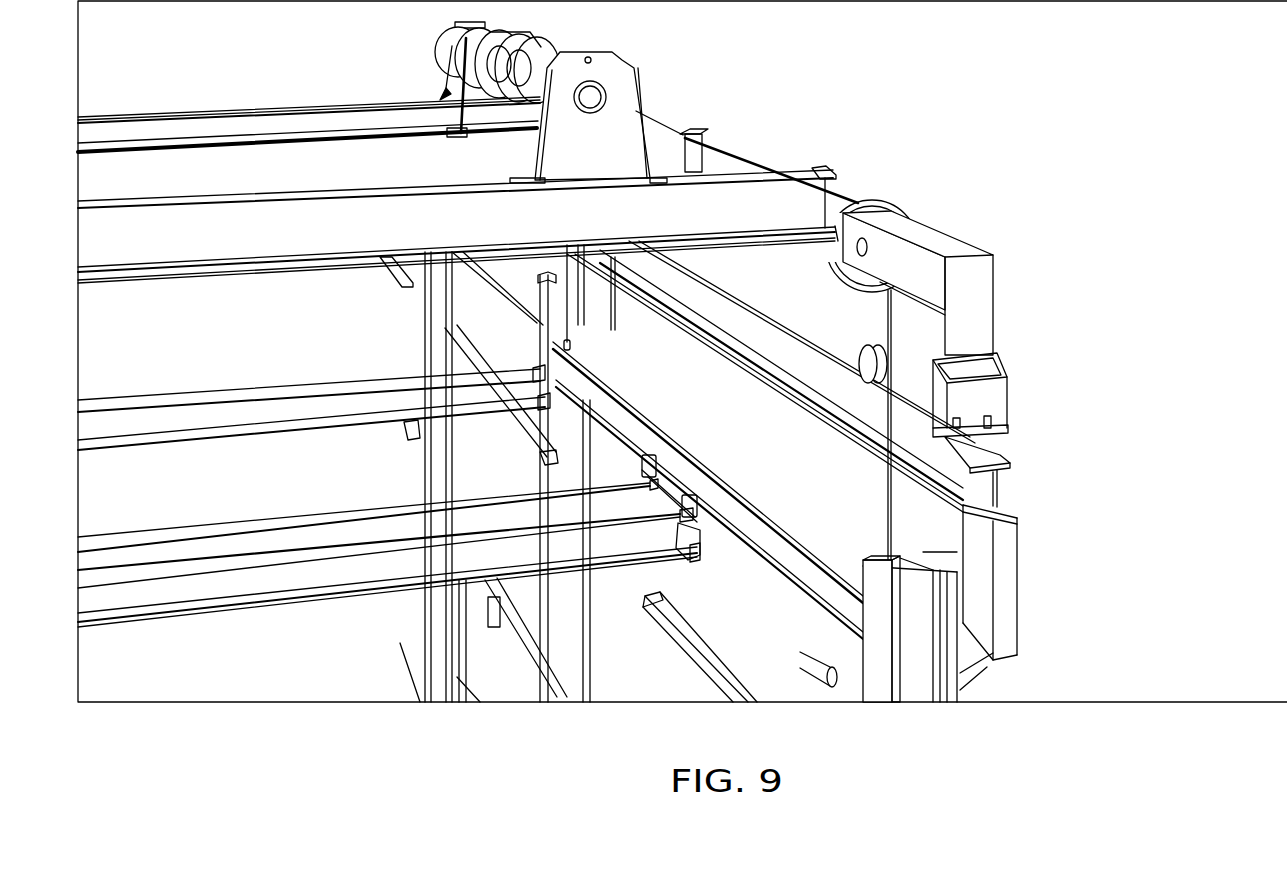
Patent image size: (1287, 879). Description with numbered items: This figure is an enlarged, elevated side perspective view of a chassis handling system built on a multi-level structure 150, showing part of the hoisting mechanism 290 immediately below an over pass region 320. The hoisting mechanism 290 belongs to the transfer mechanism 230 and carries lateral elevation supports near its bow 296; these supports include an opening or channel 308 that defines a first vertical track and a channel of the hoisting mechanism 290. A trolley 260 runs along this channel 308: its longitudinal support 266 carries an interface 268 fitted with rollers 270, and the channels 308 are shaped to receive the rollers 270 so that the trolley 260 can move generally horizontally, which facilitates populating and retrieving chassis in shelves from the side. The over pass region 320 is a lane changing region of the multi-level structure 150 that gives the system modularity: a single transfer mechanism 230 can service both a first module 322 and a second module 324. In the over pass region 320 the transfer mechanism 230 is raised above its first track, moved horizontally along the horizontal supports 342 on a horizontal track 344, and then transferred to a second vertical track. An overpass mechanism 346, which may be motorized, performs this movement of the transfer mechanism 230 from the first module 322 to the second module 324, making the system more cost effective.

The multi-level structure 150 is at (873, 702).
The transfer mechanism 230 is at (784, 502).
The trolley 260 is at (610, 565).
The longitudinal support 266 is at (222, 607).
The interface 268 is at (681, 538).
The rollers 270 is at (698, 498).
The hoisting mechanism 290 is at (622, 393).
The bow 296 is at (1040, 511).
The channel 308 is at (558, 302).
The over pass region 320 is at (930, 533).
The first module 322 is at (752, 628).
The second module 324 is at (514, 340).
The horizontal supports 342 is at (998, 480).
The horizontal track 344 is at (1003, 456).
The overpass mechanism 346 is at (982, 277).